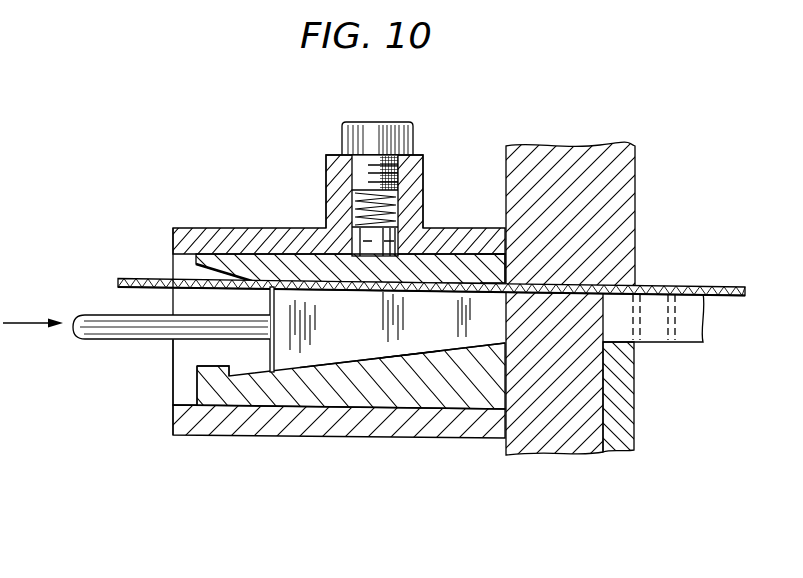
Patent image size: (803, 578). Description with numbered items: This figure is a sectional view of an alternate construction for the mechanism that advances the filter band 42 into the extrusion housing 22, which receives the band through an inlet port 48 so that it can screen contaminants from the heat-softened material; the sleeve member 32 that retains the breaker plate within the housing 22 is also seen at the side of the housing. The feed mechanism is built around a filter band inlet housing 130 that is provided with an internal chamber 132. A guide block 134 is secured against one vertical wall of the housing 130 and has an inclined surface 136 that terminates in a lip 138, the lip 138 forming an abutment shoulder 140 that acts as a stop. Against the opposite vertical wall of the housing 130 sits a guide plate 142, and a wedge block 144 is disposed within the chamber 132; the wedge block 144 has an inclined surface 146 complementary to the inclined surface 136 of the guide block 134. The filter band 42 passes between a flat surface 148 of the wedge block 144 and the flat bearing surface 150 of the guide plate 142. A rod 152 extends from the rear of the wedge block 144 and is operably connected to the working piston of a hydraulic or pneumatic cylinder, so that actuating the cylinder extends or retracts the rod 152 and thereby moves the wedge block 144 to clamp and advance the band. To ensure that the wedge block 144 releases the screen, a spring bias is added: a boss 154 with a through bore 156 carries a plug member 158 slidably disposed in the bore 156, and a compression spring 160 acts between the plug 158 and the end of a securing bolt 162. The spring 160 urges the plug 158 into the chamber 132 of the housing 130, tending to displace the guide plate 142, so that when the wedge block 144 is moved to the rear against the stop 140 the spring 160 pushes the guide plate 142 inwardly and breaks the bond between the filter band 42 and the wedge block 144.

The housing 22 is at (628, 164).
The sleeve member 32 is at (636, 395).
The filter band 42 is at (727, 287).
The inlet port 48 is at (629, 290).
The filter band inlet housing 130 is at (201, 436).
The chamber 132 is at (290, 402).
The guide block 134 is at (376, 426).
The inclined surface 136 is at (448, 352).
The lip 138 is at (194, 364).
The abutment shoulder 140 is at (243, 361).
The guide plate 142 is at (484, 272).
The wedge block 144 is at (269, 303).
The inclined surface 146 is at (460, 349).
The flat surface 148 is at (345, 290).
The flat bearing surface 150 is at (271, 290).
The rod 152 is at (106, 314).
The boss 154 is at (327, 162).
The through bore 156 is at (352, 208).
The plug member 158 is at (384, 243).
The compression spring 160 is at (402, 197).
The securing bolt 162 is at (346, 128).